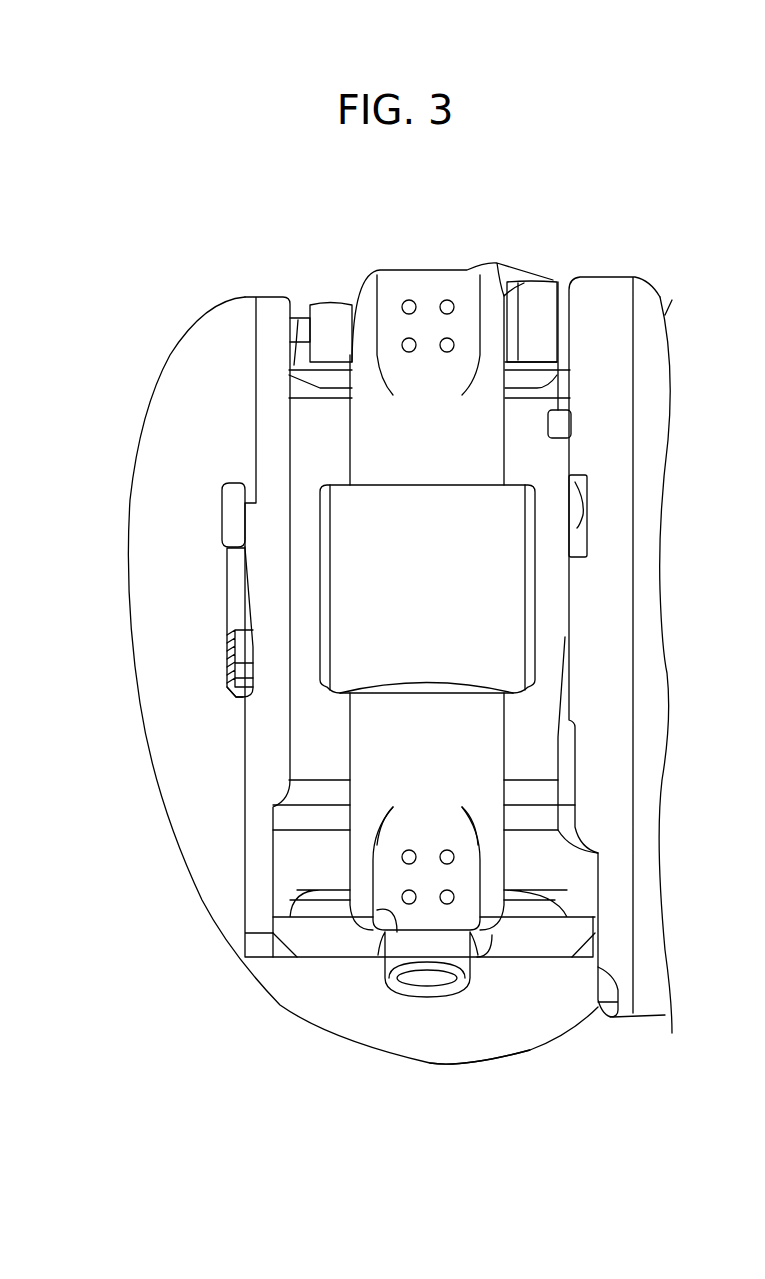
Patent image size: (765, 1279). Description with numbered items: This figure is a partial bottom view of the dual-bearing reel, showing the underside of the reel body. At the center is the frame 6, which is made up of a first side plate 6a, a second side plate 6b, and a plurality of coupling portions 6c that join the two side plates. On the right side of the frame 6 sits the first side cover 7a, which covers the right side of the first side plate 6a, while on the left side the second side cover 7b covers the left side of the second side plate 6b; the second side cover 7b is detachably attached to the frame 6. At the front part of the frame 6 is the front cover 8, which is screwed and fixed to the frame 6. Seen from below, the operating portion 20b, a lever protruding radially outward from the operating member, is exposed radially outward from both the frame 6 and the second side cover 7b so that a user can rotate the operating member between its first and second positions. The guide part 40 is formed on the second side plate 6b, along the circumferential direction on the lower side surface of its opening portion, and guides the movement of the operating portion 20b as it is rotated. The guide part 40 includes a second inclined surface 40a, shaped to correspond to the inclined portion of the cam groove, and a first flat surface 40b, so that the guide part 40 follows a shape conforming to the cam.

The frame 6 is at (264, 952).
The first side plate 6a is at (602, 310).
The second side plate 6b is at (270, 312).
The coupling portion 6c is at (298, 332).
The first side cover 7a is at (656, 315).
The second side cover 7b is at (150, 670).
The front cover 8 is at (455, 1035).
The operating portion 20b is at (223, 677).
The guide part 40 is at (238, 597).
The second inclined surface 40a is at (227, 567).
The first flat surface 40b is at (235, 623).